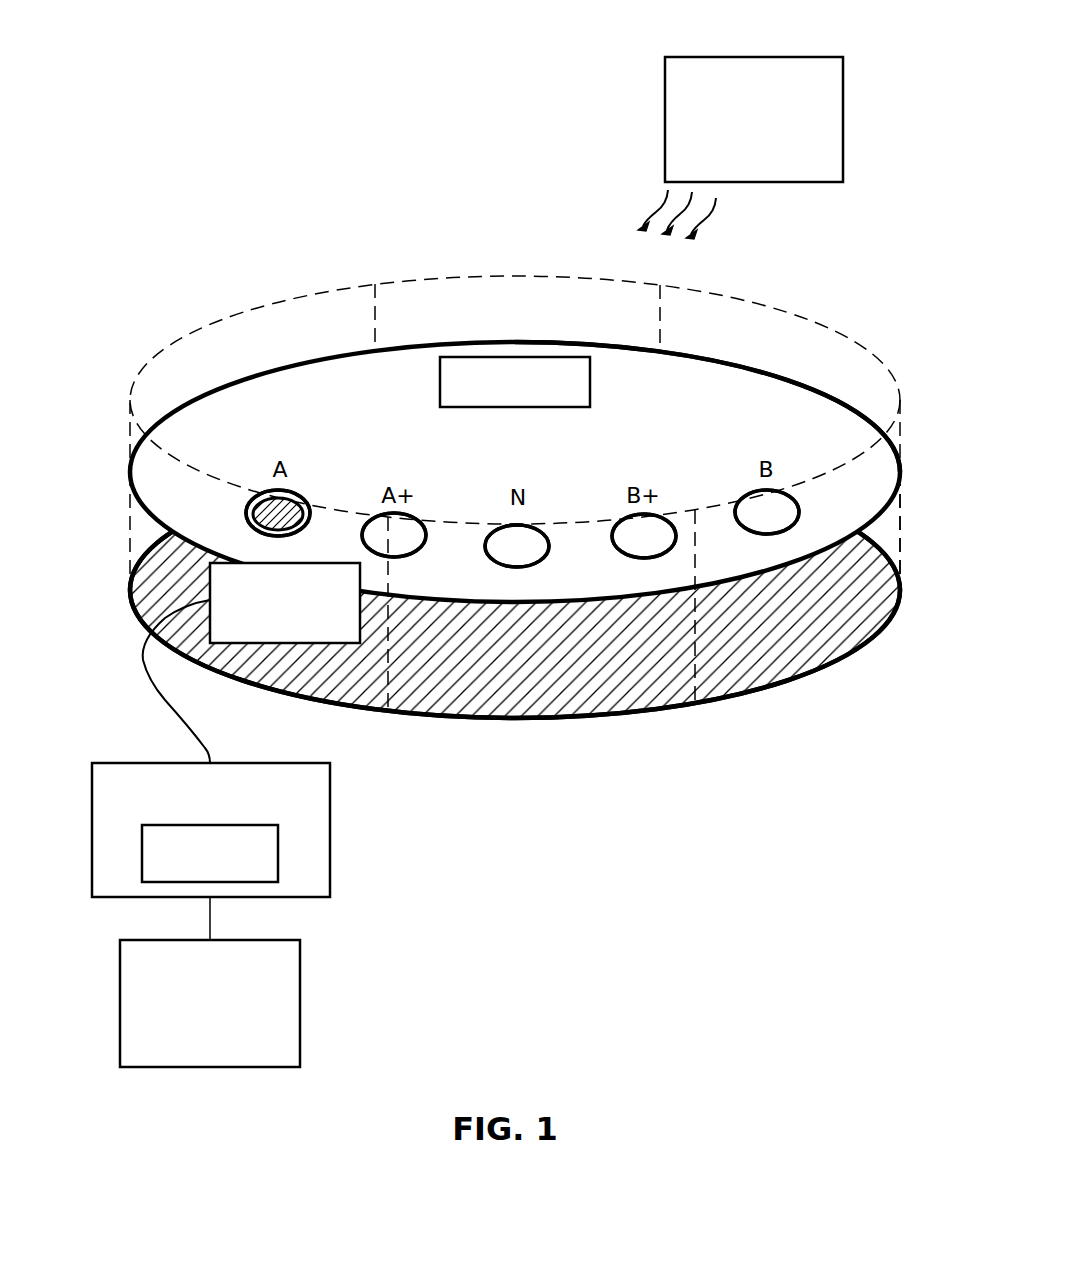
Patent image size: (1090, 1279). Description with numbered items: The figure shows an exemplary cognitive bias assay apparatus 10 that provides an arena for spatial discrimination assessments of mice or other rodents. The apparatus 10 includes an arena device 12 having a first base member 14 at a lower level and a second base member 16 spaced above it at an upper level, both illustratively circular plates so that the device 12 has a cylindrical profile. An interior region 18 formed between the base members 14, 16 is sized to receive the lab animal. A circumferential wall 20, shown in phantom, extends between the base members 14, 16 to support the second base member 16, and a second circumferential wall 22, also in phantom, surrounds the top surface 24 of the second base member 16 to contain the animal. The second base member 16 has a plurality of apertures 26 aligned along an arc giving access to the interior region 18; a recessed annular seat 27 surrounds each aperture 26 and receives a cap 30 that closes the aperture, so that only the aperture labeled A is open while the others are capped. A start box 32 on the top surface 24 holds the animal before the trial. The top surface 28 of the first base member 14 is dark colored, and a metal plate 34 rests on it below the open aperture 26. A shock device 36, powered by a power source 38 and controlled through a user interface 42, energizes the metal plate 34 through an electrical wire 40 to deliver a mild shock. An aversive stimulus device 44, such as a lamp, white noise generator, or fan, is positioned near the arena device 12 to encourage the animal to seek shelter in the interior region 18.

The cognitive bias assay apparatus 10 is at (186, 56).
The arena device 12 is at (114, 315).
The first base member 14 is at (858, 650).
The second base member 16 is at (717, 357).
The interior region 18 is at (863, 560).
The circumferential wall 20 is at (128, 536).
The circumferential wall 22 is at (130, 418).
The top surface 24 is at (800, 395).
The apertures 26 is at (304, 525).
The recessed annular seat 27 is at (247, 517).
The top surface 28 is at (778, 663).
The caps 30 is at (406, 529).
The start box 32 is at (592, 381).
The metal plate 34 is at (230, 650).
The shock device 36 is at (262, 763).
The power source 38 is at (262, 940).
The electrical wire 40 is at (150, 692).
The user interface 42 is at (279, 855).
The aversive stimulus device 44 is at (805, 57).